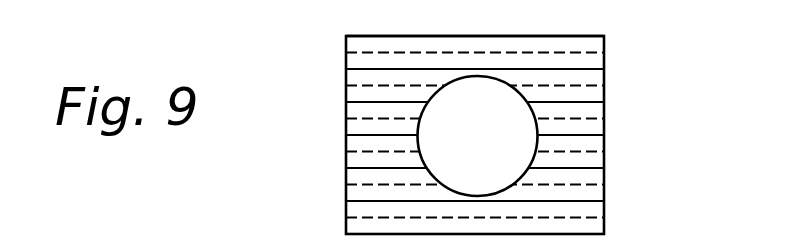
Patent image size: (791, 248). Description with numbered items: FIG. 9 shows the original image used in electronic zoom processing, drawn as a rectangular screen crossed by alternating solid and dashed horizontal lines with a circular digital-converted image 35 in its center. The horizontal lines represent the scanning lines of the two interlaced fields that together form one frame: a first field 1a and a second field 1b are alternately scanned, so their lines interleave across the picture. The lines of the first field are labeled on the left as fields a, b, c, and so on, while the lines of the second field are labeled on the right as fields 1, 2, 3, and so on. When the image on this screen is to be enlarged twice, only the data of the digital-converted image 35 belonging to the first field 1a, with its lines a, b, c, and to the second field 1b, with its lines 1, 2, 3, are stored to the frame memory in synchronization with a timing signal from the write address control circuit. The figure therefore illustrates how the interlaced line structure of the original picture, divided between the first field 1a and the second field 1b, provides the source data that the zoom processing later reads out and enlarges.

The second field line 1 is at (595, 93).
The first field 1a is at (558, 46).
The second field 1b is at (587, 62).
The second field line 2 is at (593, 129).
The second field line 3 is at (592, 163).
The digital-converted image 35 is at (461, 76).
The first field line a is at (355, 77).
The first field line b is at (355, 107).
The first field line c is at (355, 145).